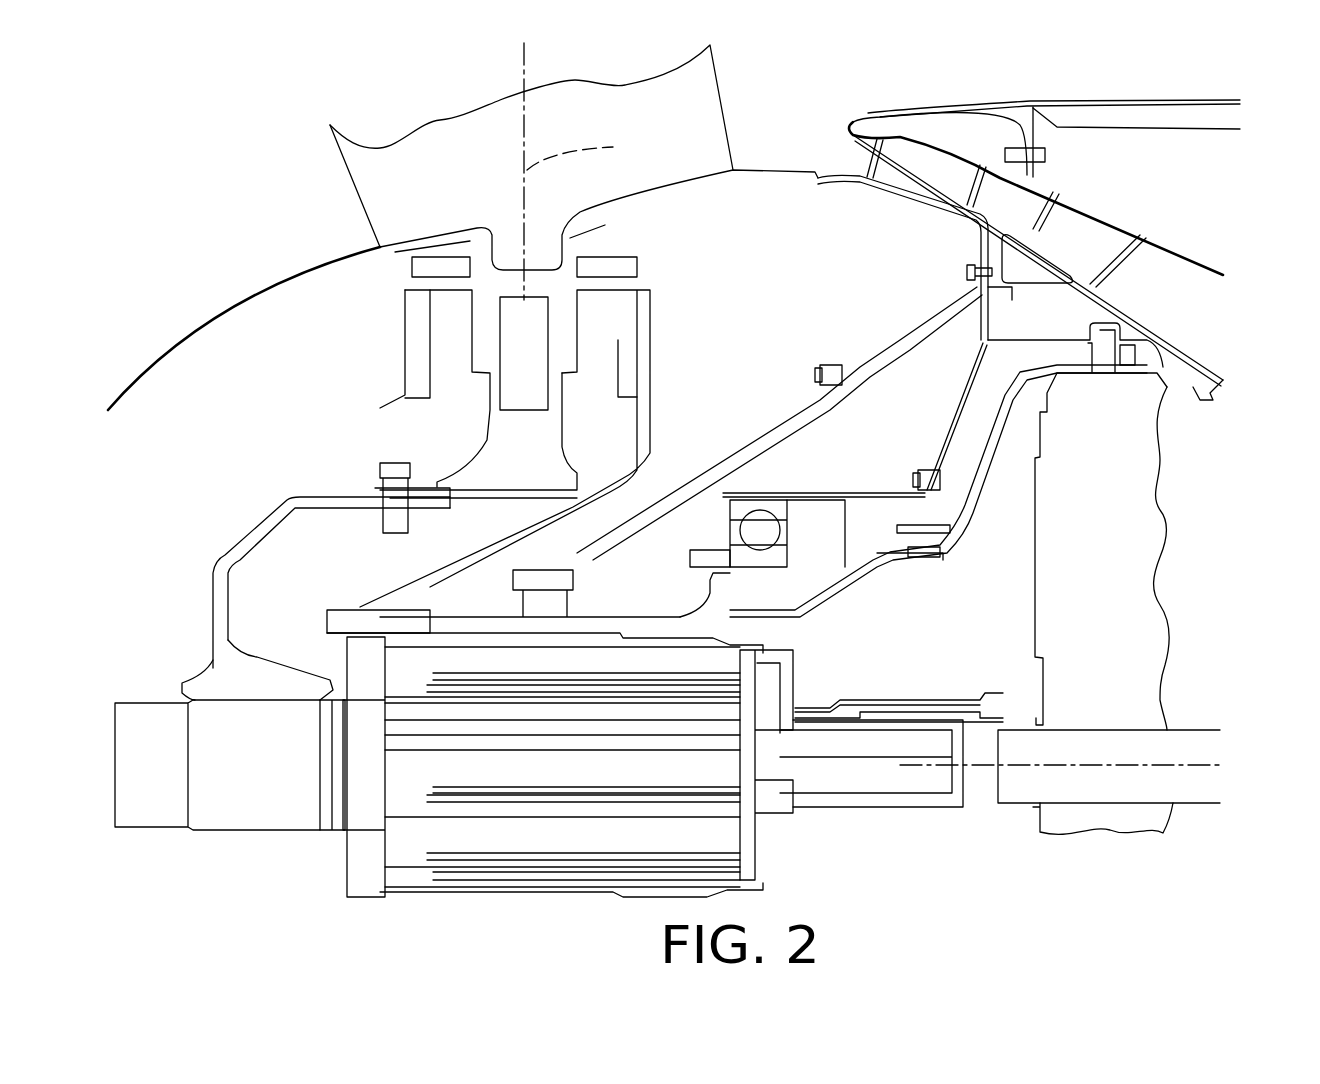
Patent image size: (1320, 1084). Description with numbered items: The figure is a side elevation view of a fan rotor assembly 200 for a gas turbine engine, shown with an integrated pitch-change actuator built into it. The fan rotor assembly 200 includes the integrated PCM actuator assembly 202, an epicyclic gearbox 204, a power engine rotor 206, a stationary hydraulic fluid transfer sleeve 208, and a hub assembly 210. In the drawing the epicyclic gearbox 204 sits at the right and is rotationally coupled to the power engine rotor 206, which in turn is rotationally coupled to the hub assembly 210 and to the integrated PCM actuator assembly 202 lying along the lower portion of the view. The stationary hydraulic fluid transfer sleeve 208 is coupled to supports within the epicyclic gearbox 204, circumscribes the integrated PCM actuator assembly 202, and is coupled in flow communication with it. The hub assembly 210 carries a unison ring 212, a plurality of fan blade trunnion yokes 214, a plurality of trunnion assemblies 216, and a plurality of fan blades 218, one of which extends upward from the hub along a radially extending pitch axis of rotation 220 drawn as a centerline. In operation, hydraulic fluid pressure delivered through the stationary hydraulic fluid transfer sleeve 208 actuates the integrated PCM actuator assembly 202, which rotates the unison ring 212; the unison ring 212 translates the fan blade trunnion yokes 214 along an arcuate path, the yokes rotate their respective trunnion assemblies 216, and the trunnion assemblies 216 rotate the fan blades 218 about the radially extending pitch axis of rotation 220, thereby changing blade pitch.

The fan rotor assembly 200 is at (1035, 845).
The integrated PCM actuator assembly 202 is at (760, 855).
The epicyclic gearbox 204 is at (1185, 470).
The power engine rotor 206 is at (965, 545).
The stationary hydraulic fluid transfer sleeve 208 is at (887, 695).
The hub assembly 210 is at (385, 375).
The unison ring 212 is at (243, 548).
The fan blade trunnion yoke 214 is at (445, 476).
The trunnion assembly 216 is at (637, 303).
The fan blade 218 is at (730, 112).
The radially extending pitch axis of rotation 220 is at (601, 152).